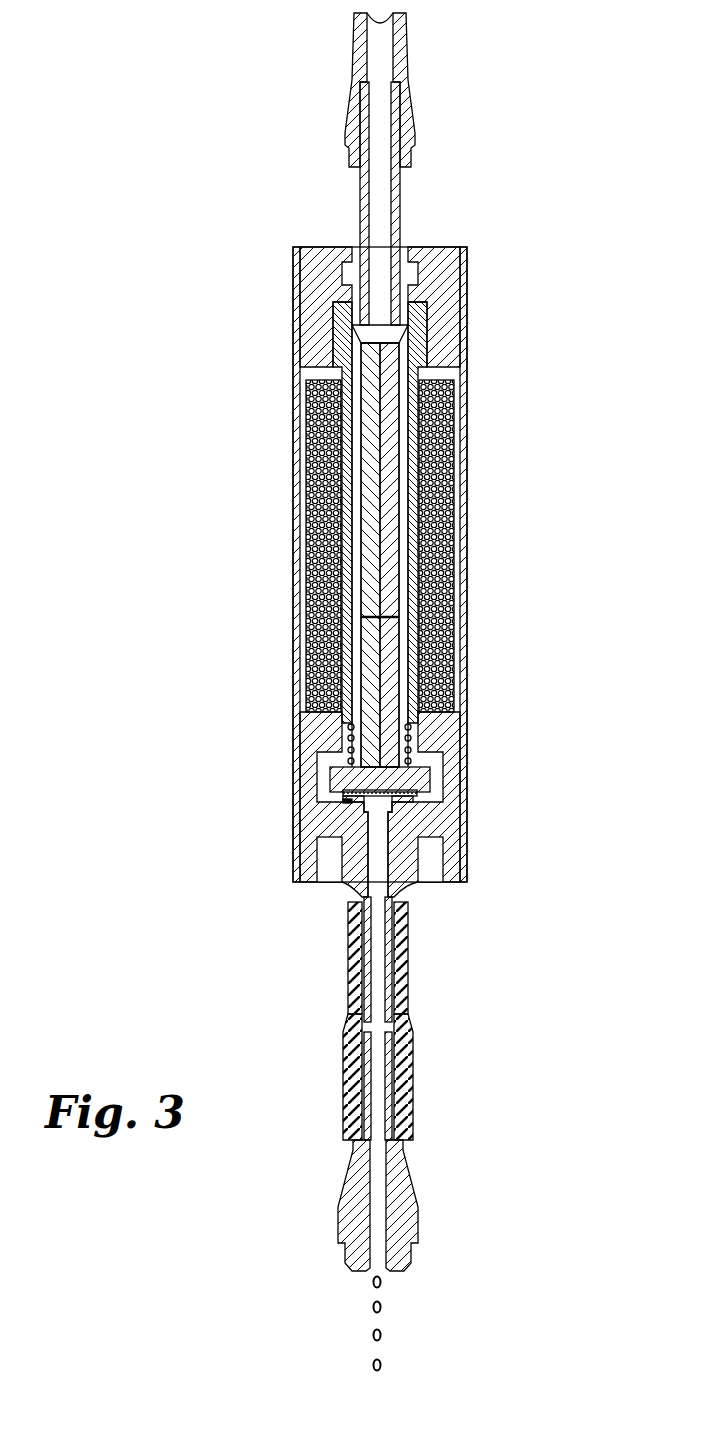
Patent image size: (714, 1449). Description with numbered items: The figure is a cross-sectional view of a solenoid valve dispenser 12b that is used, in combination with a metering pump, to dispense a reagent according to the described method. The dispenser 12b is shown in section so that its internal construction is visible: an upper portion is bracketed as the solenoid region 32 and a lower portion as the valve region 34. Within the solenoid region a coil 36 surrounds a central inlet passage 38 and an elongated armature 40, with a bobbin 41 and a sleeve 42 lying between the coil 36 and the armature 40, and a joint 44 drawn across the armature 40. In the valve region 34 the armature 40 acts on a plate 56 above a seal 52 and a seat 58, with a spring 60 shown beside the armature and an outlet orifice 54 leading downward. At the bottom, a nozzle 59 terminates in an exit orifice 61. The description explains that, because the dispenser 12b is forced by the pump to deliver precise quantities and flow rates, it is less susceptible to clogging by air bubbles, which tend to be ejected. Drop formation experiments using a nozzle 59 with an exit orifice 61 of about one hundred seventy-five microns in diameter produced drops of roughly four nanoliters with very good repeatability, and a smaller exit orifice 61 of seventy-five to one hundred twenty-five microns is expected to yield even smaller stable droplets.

The solenoid valve dispenser 12b is at (184, 124).
The solenoid section 32 is at (473, 376).
The valve section 34 is at (473, 715).
The coil 36 is at (437, 408).
The inlet passage 38 is at (387, 360).
The armature 40 is at (372, 580).
The bobbin 41 is at (350, 502).
The sleeve 42 is at (355, 430).
The armature joint 44 is at (372, 618).
The valve seal 52 is at (347, 798).
The outlet orifice 54 is at (383, 813).
The valve plate 56 is at (330, 780).
The valve seat 58 is at (400, 797).
The nozzle 59 is at (407, 1200).
The spring 60 is at (350, 737).
The exit orifice 61 is at (380, 1270).